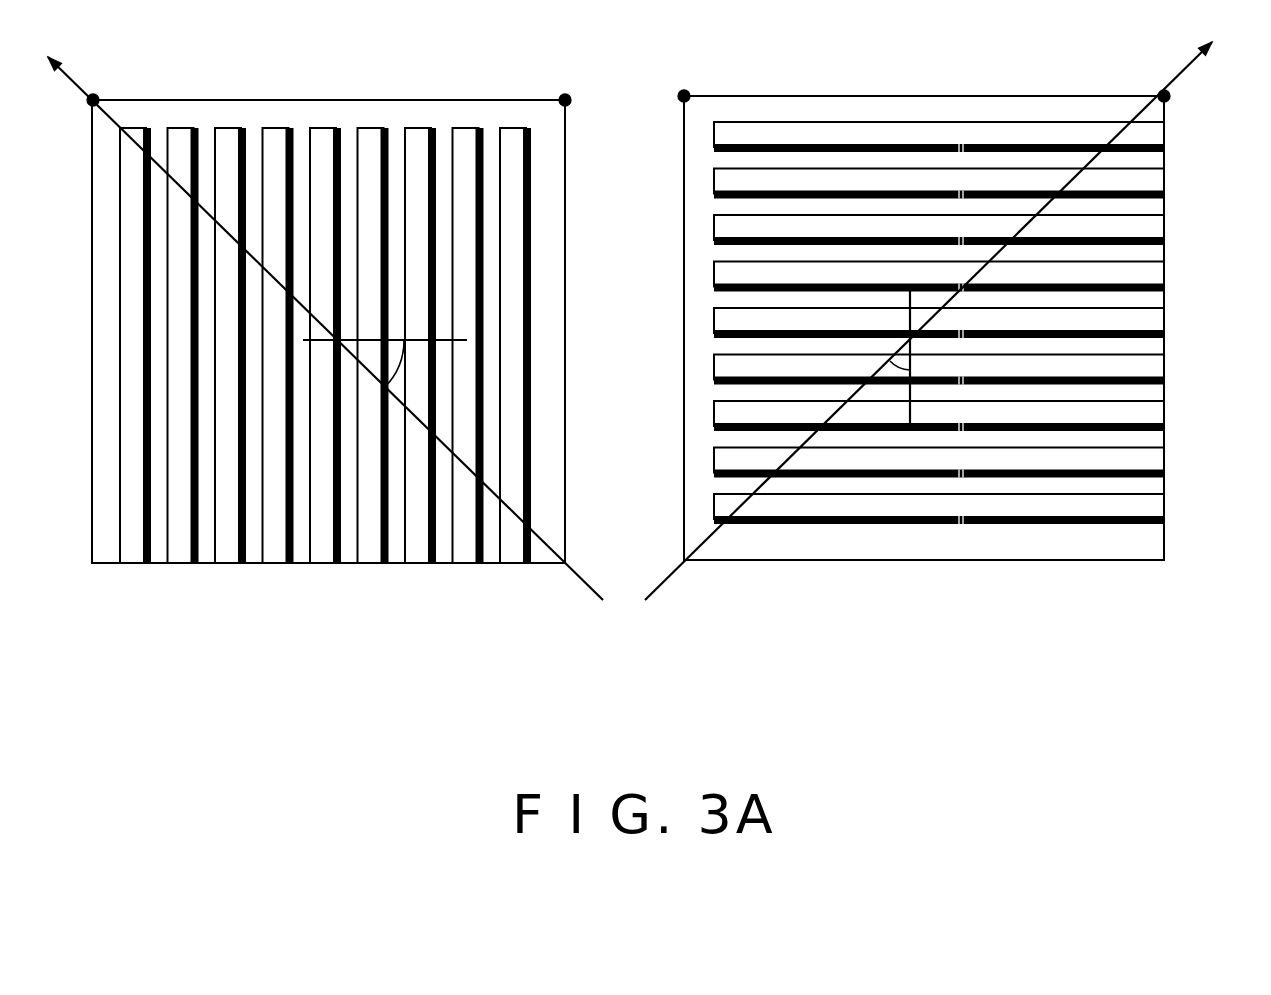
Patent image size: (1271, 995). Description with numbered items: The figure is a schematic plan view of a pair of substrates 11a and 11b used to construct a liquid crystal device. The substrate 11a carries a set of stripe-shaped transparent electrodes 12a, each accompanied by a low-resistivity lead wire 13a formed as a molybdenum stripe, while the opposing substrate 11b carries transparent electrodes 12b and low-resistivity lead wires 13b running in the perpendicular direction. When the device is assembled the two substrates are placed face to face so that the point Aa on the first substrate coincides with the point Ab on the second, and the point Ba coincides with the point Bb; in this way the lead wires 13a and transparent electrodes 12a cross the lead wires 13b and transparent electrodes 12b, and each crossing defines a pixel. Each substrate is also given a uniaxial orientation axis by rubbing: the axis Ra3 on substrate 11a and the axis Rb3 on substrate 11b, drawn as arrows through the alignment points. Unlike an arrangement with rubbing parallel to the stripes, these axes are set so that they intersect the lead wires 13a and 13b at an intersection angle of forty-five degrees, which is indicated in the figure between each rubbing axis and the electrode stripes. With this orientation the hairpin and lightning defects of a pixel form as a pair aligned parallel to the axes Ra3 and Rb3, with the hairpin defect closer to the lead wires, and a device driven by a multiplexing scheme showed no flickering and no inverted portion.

The substrate 11a is at (105, 565).
The transparent electrode 12a is at (134, 565).
The low-resistivity lead wire 13a is at (146, 565).
The uniaxial orientation axis Ra3 is at (570, 582).
The point Aa is at (557, 85).
The point Ba is at (107, 85).
The substrate 11b is at (1164, 540).
The transparent electrode 12b is at (1164, 130).
The low-resistivity lead wire 13b is at (1164, 148).
The uniaxial orientation axis Rb3 is at (668, 580).
The point Ab is at (690, 82).
The point Bb is at (1146, 82).